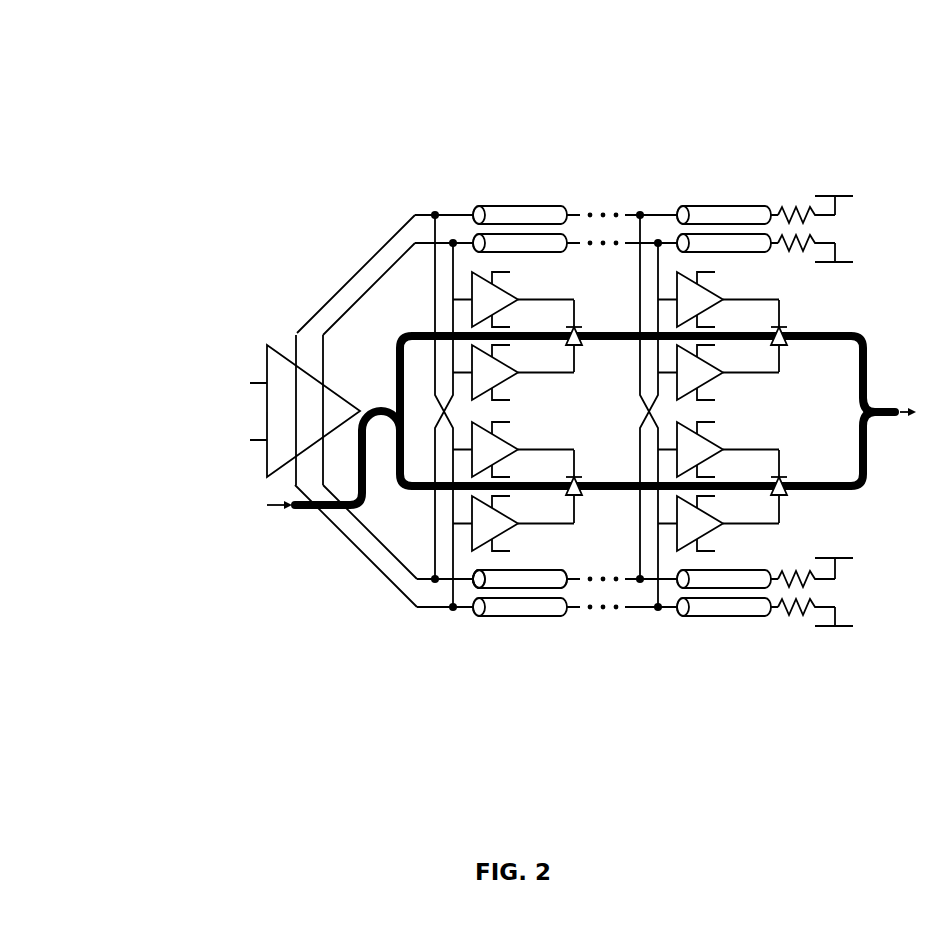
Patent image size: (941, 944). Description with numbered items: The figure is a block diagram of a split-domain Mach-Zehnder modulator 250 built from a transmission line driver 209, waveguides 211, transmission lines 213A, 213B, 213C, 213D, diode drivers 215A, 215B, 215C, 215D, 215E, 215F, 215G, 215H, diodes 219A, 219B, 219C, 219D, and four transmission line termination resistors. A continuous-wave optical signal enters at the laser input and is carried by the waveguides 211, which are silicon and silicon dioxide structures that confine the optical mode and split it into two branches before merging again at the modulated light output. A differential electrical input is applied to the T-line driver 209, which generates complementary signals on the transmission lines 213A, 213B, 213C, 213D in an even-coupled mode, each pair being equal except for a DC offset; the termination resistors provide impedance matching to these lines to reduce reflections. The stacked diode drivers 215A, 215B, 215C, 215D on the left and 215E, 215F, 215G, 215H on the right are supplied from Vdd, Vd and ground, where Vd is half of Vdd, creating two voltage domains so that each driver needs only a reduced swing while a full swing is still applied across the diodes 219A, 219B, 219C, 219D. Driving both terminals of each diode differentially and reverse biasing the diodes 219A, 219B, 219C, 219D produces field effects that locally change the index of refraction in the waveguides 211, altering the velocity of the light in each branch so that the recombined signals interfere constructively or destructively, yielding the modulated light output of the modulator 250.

The split-domain Mach-Zehnder modulator 250 is at (140, 100).
The transmission line driver 209 is at (311, 443).
The waveguides 211 is at (379, 406).
The transmission line 213A is at (498, 206).
The transmission line 213B is at (566, 220).
The transmission line 213C is at (567, 590).
The transmission line 213D is at (498, 617).
The diode driver 215A is at (513, 305).
The diode driver 215B is at (513, 377).
The diode driver 215C is at (513, 454).
The diode driver 215D is at (513, 529).
The diode driver 215E is at (718, 305).
The diode driver 215F is at (718, 377).
The diode driver 215G is at (718, 454).
The diode driver 215H is at (718, 529).
The diode 219A is at (580, 342).
The diode 219B is at (580, 492).
The diode 219C is at (784, 327).
The diode 219D is at (785, 493).